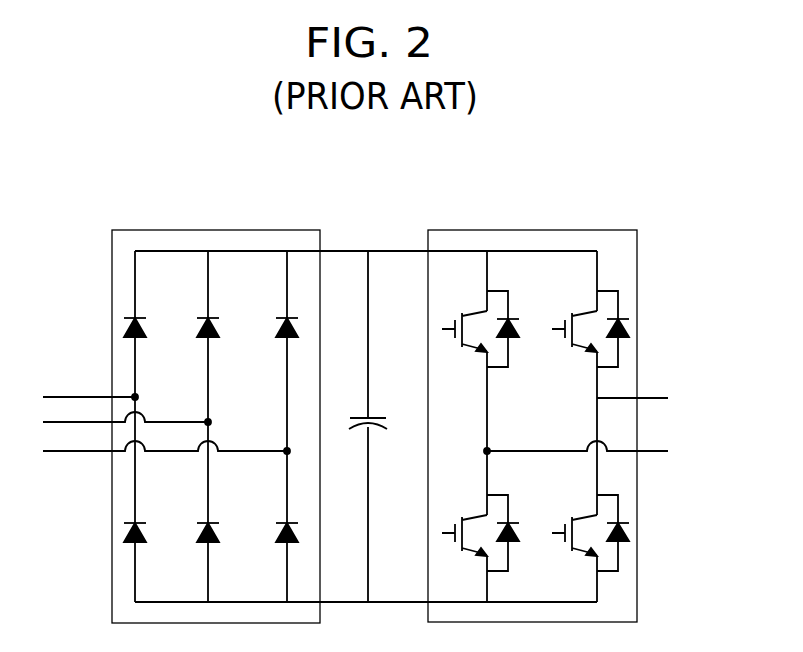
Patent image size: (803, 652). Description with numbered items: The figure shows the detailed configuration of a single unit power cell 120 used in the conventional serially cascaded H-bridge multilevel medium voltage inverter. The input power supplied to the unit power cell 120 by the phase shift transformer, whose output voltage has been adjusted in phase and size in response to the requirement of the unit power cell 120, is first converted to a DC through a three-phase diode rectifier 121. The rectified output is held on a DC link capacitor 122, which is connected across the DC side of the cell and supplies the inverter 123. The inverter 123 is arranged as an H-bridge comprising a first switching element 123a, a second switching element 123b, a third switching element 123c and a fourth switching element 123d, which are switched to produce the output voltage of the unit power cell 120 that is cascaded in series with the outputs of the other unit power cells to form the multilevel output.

The unit power cell 120 is at (594, 161).
The 3-phase diode rectifier 121 is at (304, 230).
The DC link capacitor 122 is at (372, 417).
The inverter 123 is at (548, 405).
The first switching element 123a is at (483, 311).
The second switching element 123b is at (483, 515).
The third switching element 123c is at (593, 311).
The fourth switching element 123d is at (593, 515).